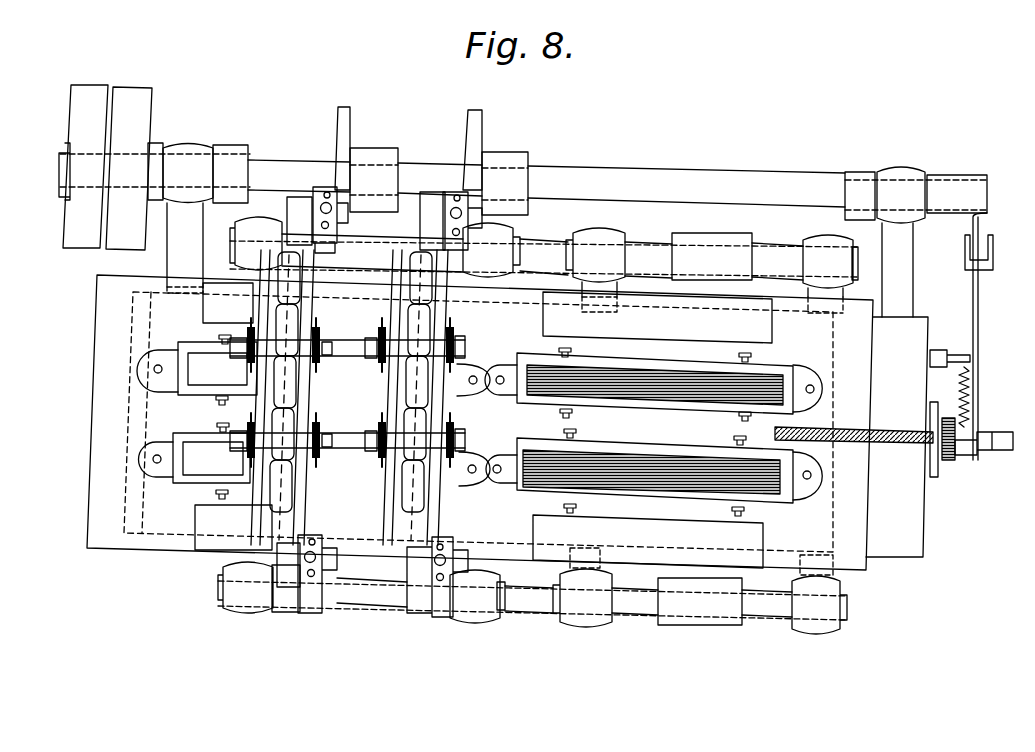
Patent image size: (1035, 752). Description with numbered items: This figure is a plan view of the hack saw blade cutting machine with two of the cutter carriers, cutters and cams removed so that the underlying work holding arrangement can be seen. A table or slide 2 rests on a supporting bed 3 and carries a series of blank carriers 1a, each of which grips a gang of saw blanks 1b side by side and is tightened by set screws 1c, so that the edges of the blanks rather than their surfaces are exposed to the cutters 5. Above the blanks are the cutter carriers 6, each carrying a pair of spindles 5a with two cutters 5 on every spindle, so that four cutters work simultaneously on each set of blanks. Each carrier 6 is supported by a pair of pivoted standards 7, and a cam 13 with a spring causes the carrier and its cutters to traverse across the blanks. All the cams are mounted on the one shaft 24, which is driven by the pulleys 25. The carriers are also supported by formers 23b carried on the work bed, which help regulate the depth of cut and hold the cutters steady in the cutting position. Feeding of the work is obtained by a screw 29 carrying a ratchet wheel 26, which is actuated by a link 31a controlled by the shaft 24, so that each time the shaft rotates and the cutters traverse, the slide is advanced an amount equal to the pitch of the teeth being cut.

The blank carrier 1a is at (165, 358).
The saw blank 1b is at (617, 470).
The set screw 1c is at (220, 337).
The slide 2 is at (513, 317).
The supporting bed 3 is at (897, 437).
The cutter 5 is at (248, 368).
The spindle 5a is at (250, 340).
The cutter carrier 6 is at (300, 278).
The pivoted standard 7 is at (320, 190).
The cam 13 is at (343, 131).
The former 23b is at (205, 307).
The shaft 24 is at (653, 190).
The pulley 25 is at (130, 90).
The ratchet wheel 26 is at (945, 458).
The screw 29 is at (907, 445).
The link 31a is at (980, 302).